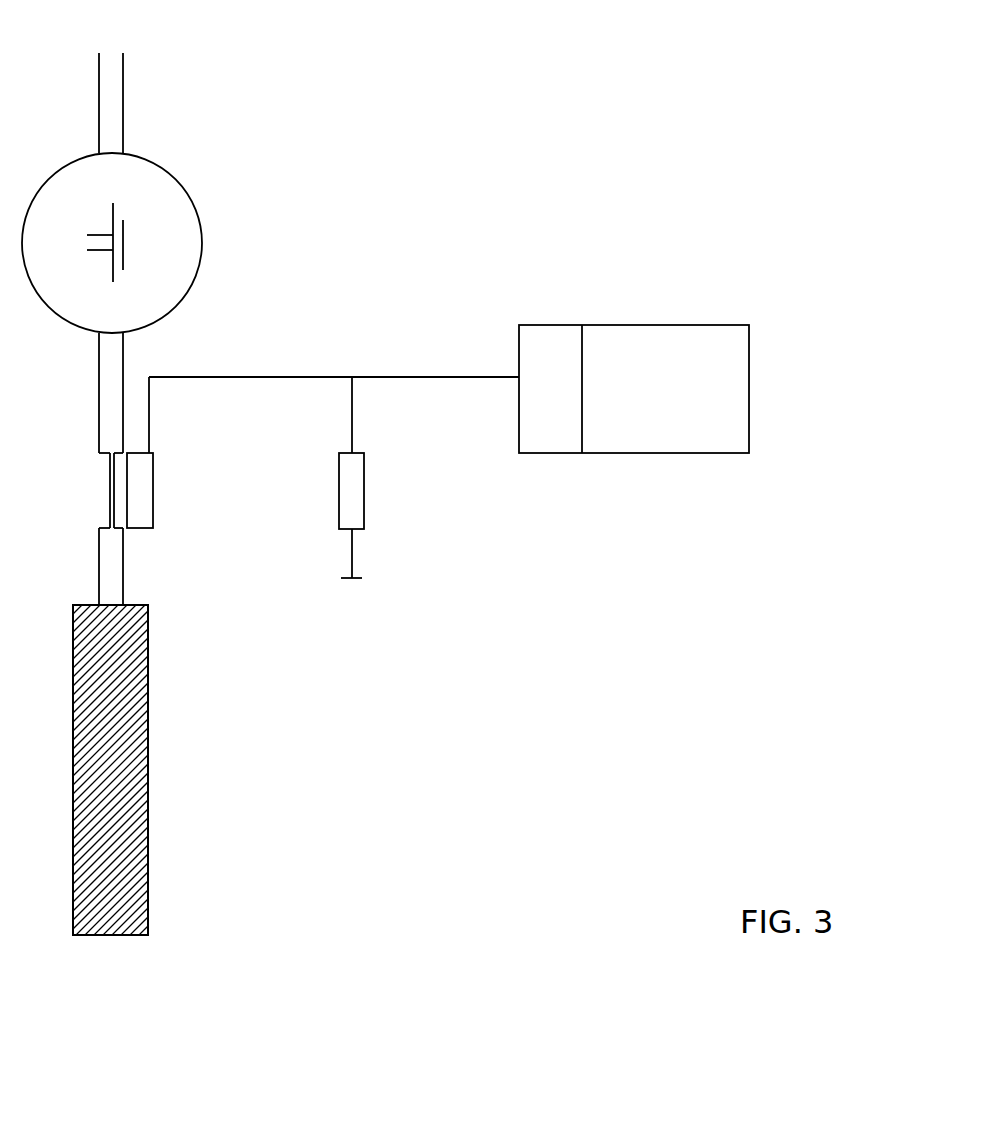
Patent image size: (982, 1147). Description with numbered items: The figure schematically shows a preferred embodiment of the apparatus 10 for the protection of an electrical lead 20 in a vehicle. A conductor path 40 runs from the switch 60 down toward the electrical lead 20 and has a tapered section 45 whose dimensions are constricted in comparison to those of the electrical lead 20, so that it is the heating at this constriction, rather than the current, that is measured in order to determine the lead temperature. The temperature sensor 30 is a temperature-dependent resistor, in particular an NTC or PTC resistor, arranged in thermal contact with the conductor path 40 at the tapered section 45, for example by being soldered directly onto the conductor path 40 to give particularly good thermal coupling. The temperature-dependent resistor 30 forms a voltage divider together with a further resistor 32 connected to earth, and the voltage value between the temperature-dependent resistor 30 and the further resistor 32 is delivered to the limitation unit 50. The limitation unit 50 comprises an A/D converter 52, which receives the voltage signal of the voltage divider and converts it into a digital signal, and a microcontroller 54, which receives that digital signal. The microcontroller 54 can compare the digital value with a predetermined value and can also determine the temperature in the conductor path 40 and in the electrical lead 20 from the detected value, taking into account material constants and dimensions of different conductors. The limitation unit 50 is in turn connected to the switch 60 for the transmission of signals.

The apparatus 10 is at (573, 83).
The electrical lead 20 is at (148, 877).
The temperature sensor 30 is at (153, 477).
The further resistor 32 is at (364, 473).
The conductor path 40 is at (99, 380).
The tapered section 45 is at (110, 477).
The limitation unit 50 is at (679, 416).
The A/D converter 52 is at (563, 453).
The microcontroller 54 is at (685, 453).
The switch 60 is at (195, 193).